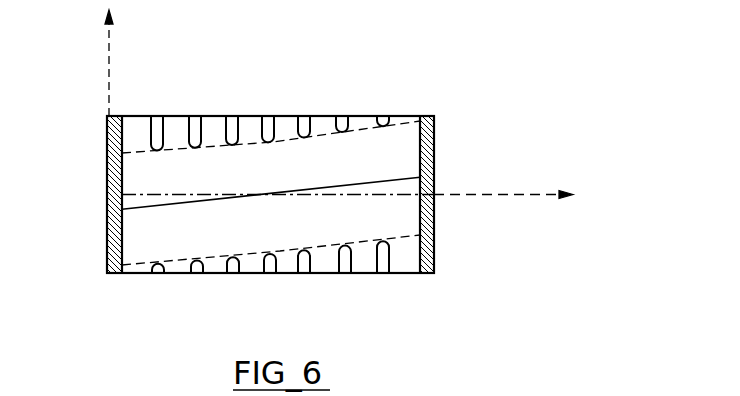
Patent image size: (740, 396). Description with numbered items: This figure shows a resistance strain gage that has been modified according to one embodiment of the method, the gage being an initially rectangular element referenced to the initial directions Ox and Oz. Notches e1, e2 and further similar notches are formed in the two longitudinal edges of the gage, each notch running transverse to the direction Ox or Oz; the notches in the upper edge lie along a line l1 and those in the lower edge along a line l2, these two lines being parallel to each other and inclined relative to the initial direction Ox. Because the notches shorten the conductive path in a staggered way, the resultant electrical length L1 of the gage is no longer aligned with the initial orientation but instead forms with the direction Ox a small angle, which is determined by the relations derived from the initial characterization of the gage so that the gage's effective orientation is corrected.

The notch e1 is at (157, 116).
The notch e2 is at (197, 116).
The groove l1 is at (287, 140).
The groove l2 is at (286, 248).
The electrical length L1 is at (324, 187).
The initial direction Oz is at (91, 62).
The initial direction Ox is at (364, 209).